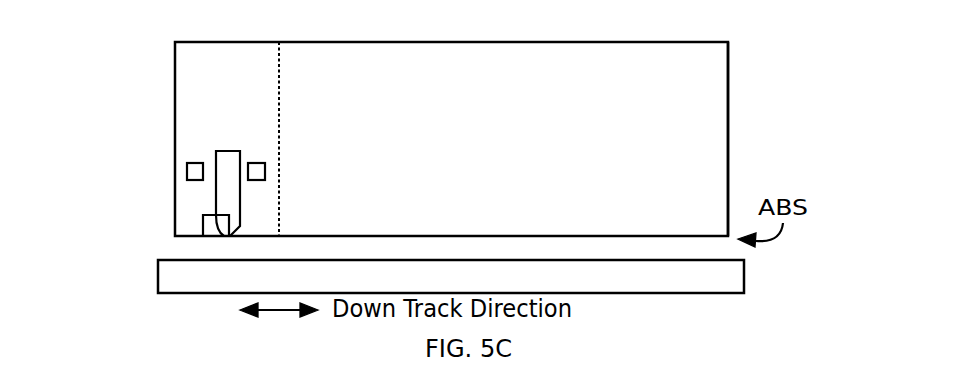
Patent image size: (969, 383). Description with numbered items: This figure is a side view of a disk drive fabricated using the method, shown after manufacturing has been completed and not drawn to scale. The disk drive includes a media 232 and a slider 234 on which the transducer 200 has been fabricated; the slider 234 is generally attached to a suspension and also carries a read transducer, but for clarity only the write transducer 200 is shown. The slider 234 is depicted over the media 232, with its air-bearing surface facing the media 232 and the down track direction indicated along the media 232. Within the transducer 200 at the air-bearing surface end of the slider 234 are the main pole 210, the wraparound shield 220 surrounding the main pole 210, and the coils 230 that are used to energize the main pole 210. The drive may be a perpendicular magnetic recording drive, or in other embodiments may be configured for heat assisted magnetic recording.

The transducer 200 is at (175, 42).
The main pole 210 is at (216, 151).
The wraparound shield 220 is at (213, 236).
The coils 230 is at (250, 163).
The media 232 is at (158, 291).
The slider 234 is at (728, 107).